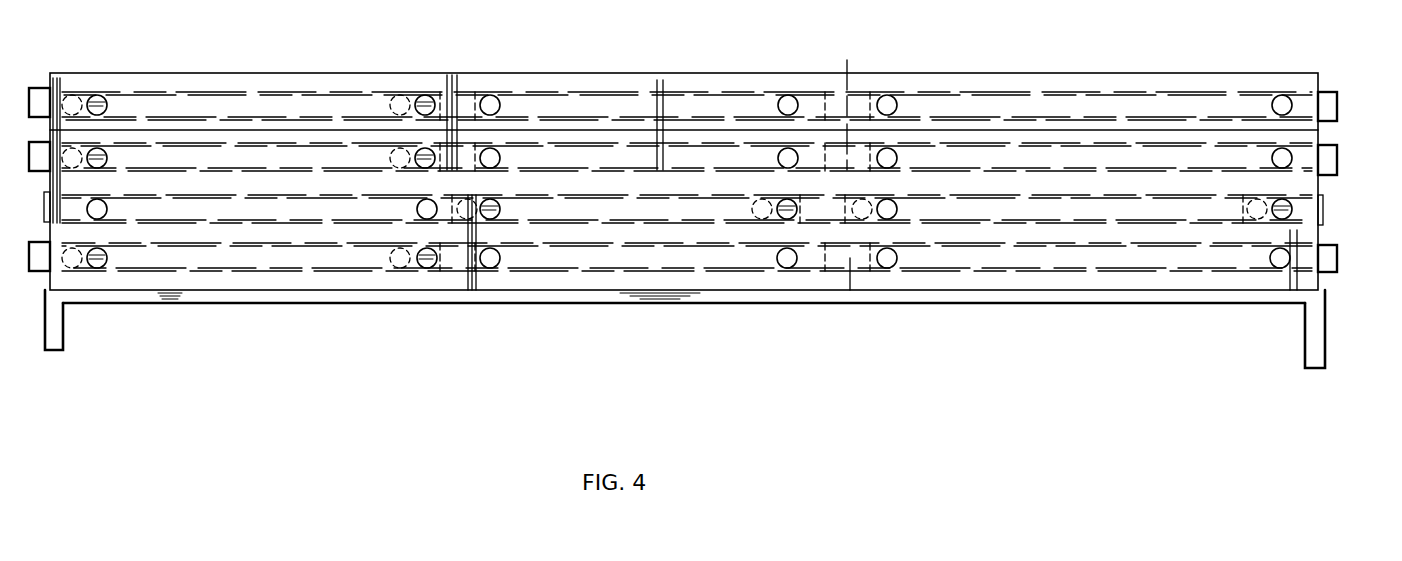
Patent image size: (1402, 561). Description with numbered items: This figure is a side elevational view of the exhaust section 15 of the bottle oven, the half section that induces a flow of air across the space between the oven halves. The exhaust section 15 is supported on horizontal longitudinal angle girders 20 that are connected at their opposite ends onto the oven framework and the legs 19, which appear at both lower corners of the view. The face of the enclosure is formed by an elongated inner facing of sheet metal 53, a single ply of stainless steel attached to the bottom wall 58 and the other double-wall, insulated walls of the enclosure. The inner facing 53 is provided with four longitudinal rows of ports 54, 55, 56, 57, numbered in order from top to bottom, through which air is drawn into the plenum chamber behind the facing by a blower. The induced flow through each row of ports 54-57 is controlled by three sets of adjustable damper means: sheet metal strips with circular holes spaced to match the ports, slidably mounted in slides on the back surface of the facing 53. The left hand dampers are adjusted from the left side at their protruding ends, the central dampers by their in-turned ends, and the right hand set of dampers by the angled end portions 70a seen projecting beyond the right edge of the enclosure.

The exhaust section 15 is at (427, 68).
The legs 19 is at (64, 330).
The longitudinal angle girders 20 is at (876, 305).
The inner facing of sheet metal 53 is at (852, 98).
The first row of ports 54 is at (428, 94).
The second row of ports 55 is at (422, 149).
The third row of ports 56 is at (424, 216).
The fourth row of ports 57 is at (430, 265).
The bottom wall 58 is at (52, 184).
The angled end portions 70a is at (1338, 101).